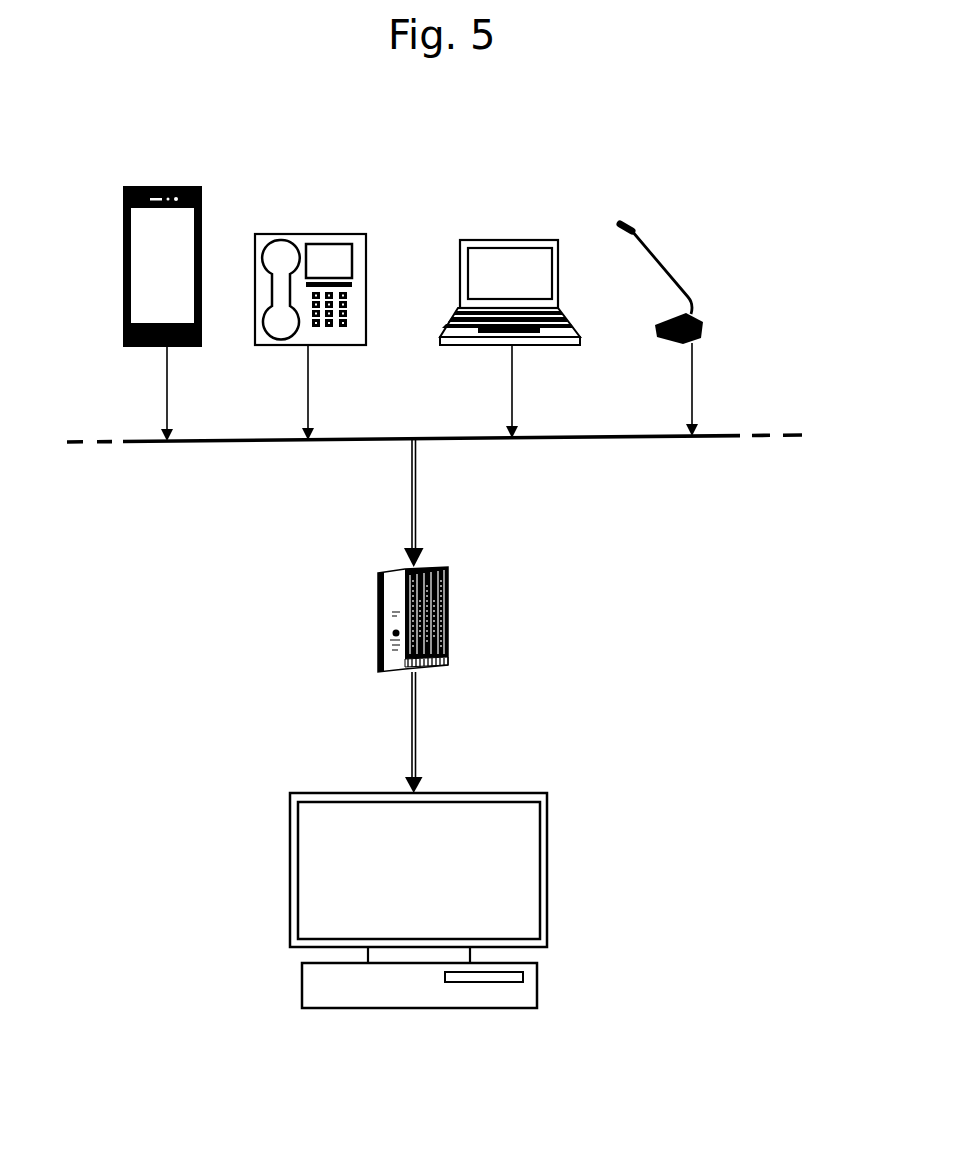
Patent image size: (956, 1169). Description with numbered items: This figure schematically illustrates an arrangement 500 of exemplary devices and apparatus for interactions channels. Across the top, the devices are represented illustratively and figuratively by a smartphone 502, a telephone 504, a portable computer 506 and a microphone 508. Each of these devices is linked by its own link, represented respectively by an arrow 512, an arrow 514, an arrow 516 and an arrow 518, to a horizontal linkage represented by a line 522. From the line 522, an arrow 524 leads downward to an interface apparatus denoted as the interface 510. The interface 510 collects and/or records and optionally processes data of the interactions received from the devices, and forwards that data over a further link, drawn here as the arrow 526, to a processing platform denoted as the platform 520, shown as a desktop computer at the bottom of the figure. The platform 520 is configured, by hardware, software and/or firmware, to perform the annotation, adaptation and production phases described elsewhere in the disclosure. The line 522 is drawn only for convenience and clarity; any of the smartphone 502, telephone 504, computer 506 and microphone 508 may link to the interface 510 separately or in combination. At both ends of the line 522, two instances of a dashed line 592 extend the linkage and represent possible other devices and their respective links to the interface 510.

The arrangement 500 is at (771, 94).
The smartphone 502 is at (172, 184).
The telephone 504 is at (340, 234).
The computer 506 is at (532, 240).
The microphone 508 is at (628, 226).
The interface 510 is at (448, 613).
The arrow 512 is at (167, 398).
The arrow 514 is at (308, 396).
The arrow 516 is at (512, 394).
The arrow 518 is at (692, 392).
The platform 520 is at (538, 990).
The line 522 is at (240, 444).
The arrow 524 is at (416, 513).
The connection from hub to computer 526 is at (416, 731).
The dashed line 592 is at (78, 445).